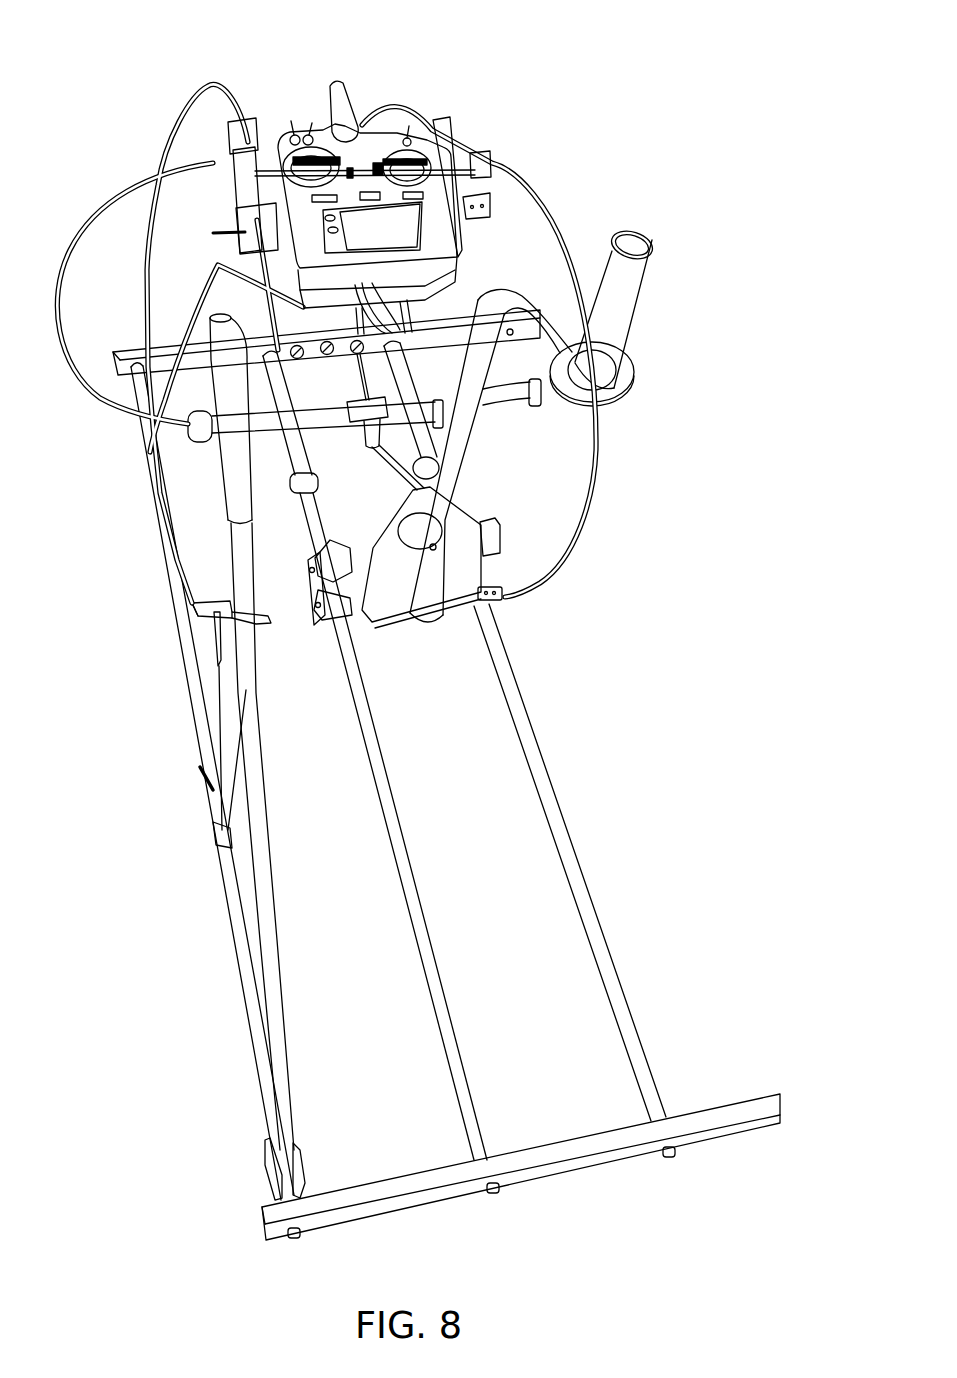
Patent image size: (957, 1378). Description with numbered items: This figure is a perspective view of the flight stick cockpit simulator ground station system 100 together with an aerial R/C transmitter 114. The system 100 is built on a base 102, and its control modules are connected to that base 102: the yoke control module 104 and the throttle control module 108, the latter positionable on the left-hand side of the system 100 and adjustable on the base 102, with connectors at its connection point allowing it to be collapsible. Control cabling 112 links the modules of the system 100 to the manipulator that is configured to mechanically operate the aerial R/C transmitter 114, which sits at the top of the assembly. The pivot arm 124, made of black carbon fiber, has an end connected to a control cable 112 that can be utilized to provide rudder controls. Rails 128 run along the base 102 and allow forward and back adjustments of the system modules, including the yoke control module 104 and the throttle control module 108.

The flight stick cockpit simulator ground station system 100 is at (749, 96).
The base 102 is at (122, 348).
The yoke control module 104 is at (632, 300).
The throttle control module 108 is at (228, 483).
The control cabling 112 is at (213, 87).
The aerial R/C transmitter 114 is at (348, 125).
The pivot arm 124 is at (455, 610).
The rails 128 is at (570, 862).